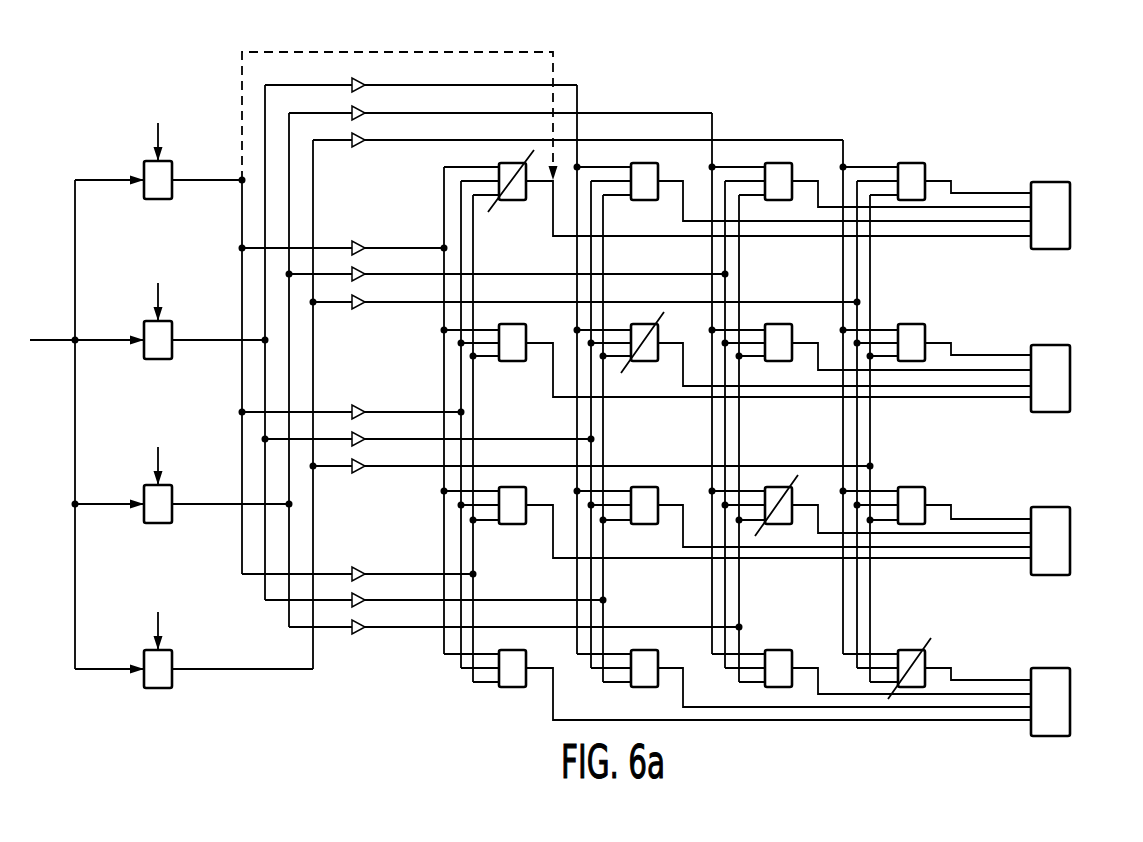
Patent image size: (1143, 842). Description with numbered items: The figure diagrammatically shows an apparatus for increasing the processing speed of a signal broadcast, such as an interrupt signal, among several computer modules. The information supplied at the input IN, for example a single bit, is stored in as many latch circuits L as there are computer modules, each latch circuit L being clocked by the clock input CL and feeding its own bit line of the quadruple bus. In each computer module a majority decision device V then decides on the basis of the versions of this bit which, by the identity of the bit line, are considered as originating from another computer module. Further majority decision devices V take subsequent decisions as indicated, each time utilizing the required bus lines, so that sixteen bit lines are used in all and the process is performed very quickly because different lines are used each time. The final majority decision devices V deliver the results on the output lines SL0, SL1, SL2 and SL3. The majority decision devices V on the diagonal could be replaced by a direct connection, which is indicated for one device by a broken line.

The latch circuit L is at (158, 424).
The majority decision device V is at (709, 424).
The clock input CL is at (168, 386).
The data input IN is at (52, 331).
The output line 0 SL0 is at (1070, 215).
The output line 1 SL1 is at (1070, 378).
The output line 2 SL2 is at (1070, 541).
The output line 3 SL3 is at (1070, 702).